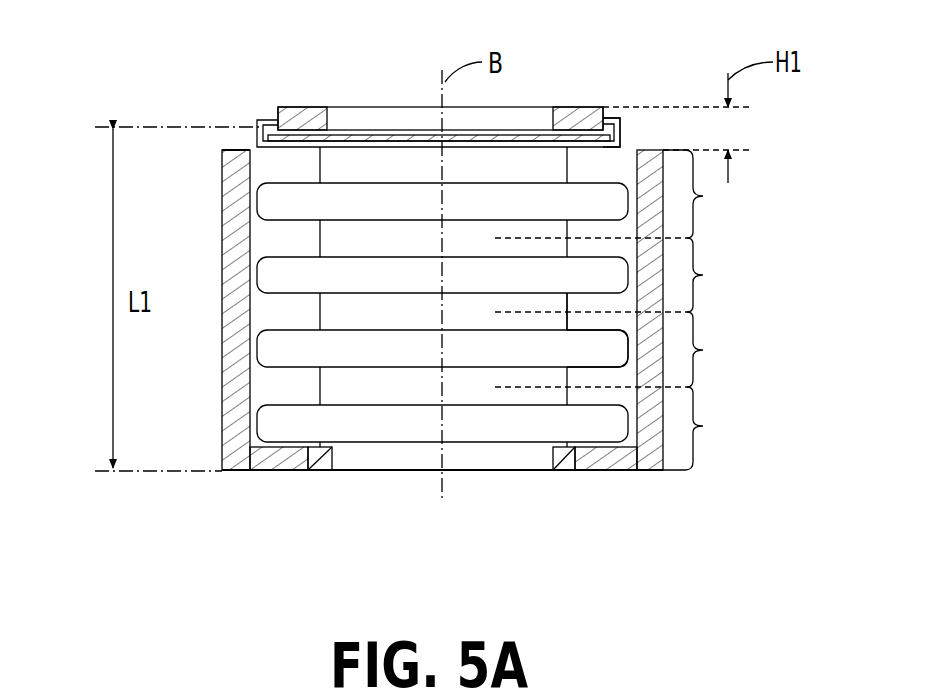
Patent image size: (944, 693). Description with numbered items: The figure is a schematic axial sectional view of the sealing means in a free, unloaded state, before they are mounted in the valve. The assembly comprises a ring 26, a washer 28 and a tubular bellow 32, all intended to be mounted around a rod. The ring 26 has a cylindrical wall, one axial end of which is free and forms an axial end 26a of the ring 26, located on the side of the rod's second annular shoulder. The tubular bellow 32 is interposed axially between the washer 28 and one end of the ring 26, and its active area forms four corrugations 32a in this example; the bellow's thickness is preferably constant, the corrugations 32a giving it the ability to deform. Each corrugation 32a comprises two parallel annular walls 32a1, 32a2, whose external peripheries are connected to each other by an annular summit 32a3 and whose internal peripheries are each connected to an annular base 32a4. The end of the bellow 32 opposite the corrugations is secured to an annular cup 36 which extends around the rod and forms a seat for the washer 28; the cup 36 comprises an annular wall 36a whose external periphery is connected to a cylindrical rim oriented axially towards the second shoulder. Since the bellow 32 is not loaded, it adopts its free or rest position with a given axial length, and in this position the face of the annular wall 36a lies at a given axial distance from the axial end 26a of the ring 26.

The ring 26 is at (221, 264).
The axial end of the ring 26a is at (227, 150).
The washer 28 is at (307, 103).
The tubular bellow 32 is at (296, 311).
The corrugation 32a is at (703, 426).
The annular wall 32a1 is at (595, 350).
The annular wall 32a2 is at (595, 345).
The annular summit 32a3 is at (595, 345).
The annular base 32a4 is at (567, 330).
The annular cup 36 is at (269, 108).
The annular wall of the cup 36a is at (587, 118).